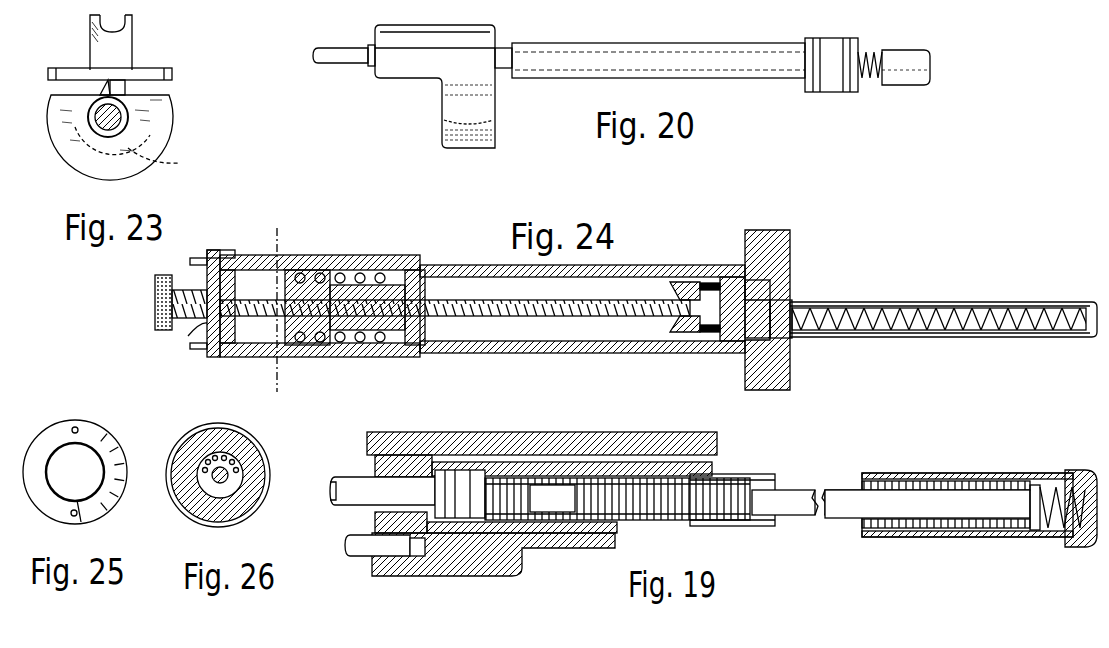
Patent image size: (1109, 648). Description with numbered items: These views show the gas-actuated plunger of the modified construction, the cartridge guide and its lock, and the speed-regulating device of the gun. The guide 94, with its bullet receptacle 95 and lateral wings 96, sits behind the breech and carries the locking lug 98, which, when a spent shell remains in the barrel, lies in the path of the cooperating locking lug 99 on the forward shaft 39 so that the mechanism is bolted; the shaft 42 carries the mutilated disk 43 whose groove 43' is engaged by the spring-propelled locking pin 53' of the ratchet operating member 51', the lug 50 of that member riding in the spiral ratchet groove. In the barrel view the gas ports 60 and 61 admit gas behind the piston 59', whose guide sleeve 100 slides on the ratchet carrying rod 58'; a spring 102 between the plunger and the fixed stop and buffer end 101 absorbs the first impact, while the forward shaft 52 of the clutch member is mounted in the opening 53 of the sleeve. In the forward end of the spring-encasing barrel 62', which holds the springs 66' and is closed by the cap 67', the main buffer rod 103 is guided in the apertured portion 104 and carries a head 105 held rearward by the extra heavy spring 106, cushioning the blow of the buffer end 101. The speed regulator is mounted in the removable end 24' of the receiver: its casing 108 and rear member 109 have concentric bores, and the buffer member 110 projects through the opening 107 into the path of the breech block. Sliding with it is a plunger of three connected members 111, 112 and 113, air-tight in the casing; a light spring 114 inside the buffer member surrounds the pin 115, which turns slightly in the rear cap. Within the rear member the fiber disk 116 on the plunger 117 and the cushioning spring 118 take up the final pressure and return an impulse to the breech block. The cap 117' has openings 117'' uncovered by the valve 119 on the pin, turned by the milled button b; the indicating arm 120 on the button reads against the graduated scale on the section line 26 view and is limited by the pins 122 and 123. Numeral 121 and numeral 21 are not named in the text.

In FIG. 23, the guide 94 is at (118, 52).
In FIG. 23, the bullet receptacle 95 is at (108, 18).
In FIG. 23, the lateral wings 96 is at (58, 68).
In FIG. 23, the locking lug 98 is at (124, 86).
In FIG. 23, the cooperating locking lug 99 is at (99, 86).
In FIG. 23, the shaft 42 is at (88, 115).
In FIG. 23, the forward shaft 39 is at (95, 127).
In FIG. 23, the mutilated disk 43 is at (128, 137).
In FIG. 23, the groove 43' is at (142, 148).
In FIG. 20, the locking pin 53' is at (344, 39).
In FIG. 20, the ratchet operating member 51' is at (455, 86).
In FIG. 20, the lug 50 is at (492, 127).
In FIG. 20, the ratchet carrying rod 58' is at (510, 37).
In FIG. 19, the ratchet carrying rod 58' is at (337, 475).
In FIG. 20, the guide sleeve 100 is at (668, 45).
In FIG. 19, the guide sleeve 100 is at (382, 491).
In FIG. 20, the piston 59' is at (831, 50).
In FIG. 19, the piston 59' is at (460, 494).
In FIG. 20, the spring 102 is at (870, 50).
In FIG. 19, the spring 102 is at (505, 478).
In FIG. 20, the fixed stop and buffer end 101 is at (903, 50).
In FIG. 19, the fixed stop and buffer end 101 is at (552, 498).
In FIG. 24, the section line 26 is at (277, 308).
In FIG. 24, the burred or milled button b is at (157, 292).
In FIG. 24, the adjusting screw 121 is at (183, 292).
In FIG. 24, the indicating arm or stop 120 is at (200, 334).
In FIG. 25, the indicating arm or stop 120 is at (85, 516).
In FIG. 24, the pin 122 is at (203, 256).
In FIG. 25, the pin 122 is at (72, 428).
In FIG. 24, the pin 123 is at (195, 350).
In FIG. 25, the pin 123 is at (71, 513).
In FIG. 24, the openings 117'' is at (193, 295).
In FIG. 24, the cap 117' is at (234, 235).
In FIG. 26, the cap 117' is at (259, 443).
In FIG. 24, the valve 119 is at (251, 335).
In FIG. 25, the valve 119 is at (80, 470).
In FIG. 26, the valve 119 is at (225, 495).
In FIG. 24, the plunger 117 is at (345, 278).
In FIG. 25, the plunger 117 is at (92, 472).
In FIG. 24, the cushioning spring 118 is at (305, 272).
In FIG. 24, the fiber disk 116 is at (414, 270).
In FIG. 24, the rear member 109 is at (385, 265).
In FIG. 24, the casing 108 is at (535, 353).
In FIG. 24, the pin 115 is at (588, 316).
In FIG. 26, the pin 115 is at (228, 478).
In FIG. 24, the plunger member 112 is at (672, 285).
In FIG. 24, the plunger member 113 is at (703, 282).
In FIG. 24, the plunger member 111 is at (730, 277).
In FIG. 24, the extra heavy spring 106 is at (752, 280).
In FIG. 19, the extra heavy spring 106 is at (1045, 537).
In FIG. 24, the removable end 24' is at (800, 310).
In FIG. 24, the opening 107 is at (790, 300).
In FIG. 24, the buffer member 110 is at (863, 302).
In FIG. 24, the light spring 114 is at (925, 310).
In FIG. 19, the housing 21 is at (600, 426).
In FIG. 19, the port 60 is at (432, 462).
In FIG. 19, the port 61 is at (448, 475).
In FIG. 19, the forward shaft 52 is at (395, 557).
In FIG. 19, the opening 53 is at (419, 568).
In FIG. 19, the spring-encasing barrel 62' is at (732, 516).
In FIG. 19, the springs 66' is at (807, 482).
In FIG. 19, the apertured portion 104 is at (920, 473).
In FIG. 19, the main buffer rod 103 is at (962, 490).
In FIG. 19, the head 105 is at (1038, 485).
In FIG. 19, the cap 67' is at (1081, 524).